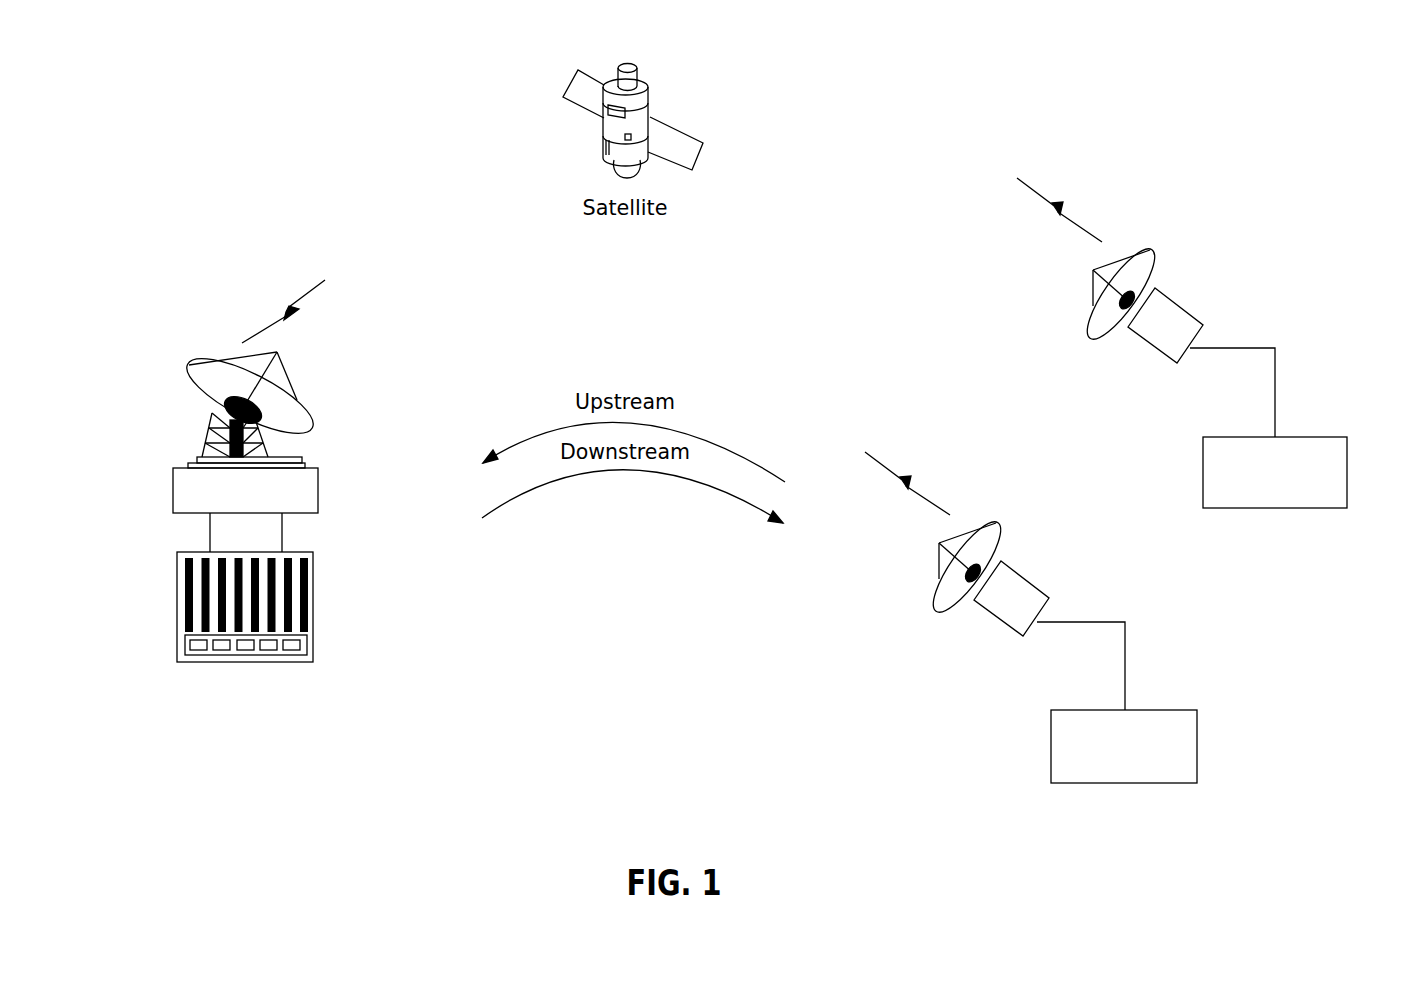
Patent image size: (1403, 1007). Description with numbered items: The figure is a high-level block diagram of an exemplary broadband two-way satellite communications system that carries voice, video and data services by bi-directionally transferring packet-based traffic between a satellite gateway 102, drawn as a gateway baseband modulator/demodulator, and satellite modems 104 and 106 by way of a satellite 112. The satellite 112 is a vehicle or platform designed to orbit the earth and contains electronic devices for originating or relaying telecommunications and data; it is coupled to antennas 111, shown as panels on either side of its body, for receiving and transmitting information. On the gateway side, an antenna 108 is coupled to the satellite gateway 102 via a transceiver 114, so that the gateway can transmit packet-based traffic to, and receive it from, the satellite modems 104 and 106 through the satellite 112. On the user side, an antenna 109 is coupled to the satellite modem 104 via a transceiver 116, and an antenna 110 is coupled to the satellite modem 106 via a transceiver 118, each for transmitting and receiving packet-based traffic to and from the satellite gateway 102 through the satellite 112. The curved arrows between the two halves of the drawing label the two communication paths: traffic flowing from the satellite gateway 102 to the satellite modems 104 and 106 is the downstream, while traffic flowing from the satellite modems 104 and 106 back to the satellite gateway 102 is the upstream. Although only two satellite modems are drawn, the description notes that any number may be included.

The satellite gateway 102 is at (313, 597).
The satellite modem 104 is at (1147, 710).
The satellite modem 106 is at (1298, 437).
The antenna 108 is at (208, 356).
The antenna 109 is at (955, 550).
The antenna 110 is at (1107, 277).
The antennas 111 is at (587, 67).
The satellite 112 is at (648, 102).
The transceiver 114 is at (318, 490).
The transceiver 116 is at (997, 618).
The transceiver 118 is at (1170, 298).